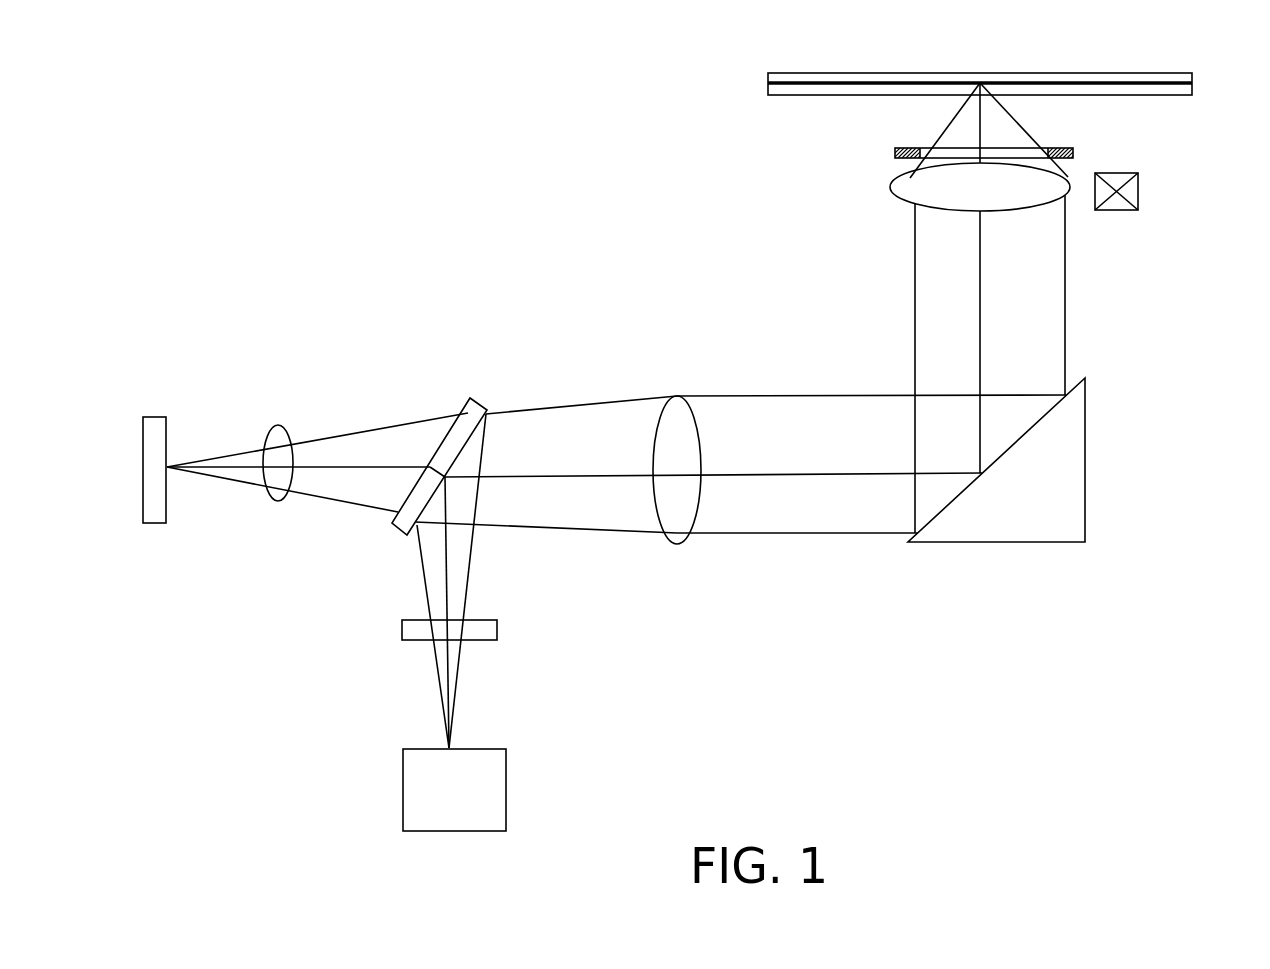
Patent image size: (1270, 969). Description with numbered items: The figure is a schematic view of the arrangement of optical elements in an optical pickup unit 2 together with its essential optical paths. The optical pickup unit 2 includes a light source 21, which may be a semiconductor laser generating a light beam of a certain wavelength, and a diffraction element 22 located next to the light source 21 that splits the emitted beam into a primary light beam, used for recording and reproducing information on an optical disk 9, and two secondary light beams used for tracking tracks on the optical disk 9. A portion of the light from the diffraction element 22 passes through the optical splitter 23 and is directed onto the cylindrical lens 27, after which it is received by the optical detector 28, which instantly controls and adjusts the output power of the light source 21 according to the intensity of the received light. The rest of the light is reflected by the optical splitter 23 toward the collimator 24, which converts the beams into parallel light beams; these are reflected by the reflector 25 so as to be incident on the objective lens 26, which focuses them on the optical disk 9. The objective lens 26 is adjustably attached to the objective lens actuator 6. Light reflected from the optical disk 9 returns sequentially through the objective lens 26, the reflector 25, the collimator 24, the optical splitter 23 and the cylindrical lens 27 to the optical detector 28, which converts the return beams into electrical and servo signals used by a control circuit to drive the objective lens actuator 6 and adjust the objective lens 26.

The optical pickup unit 2 is at (585, 149).
The optical disk 9 is at (1175, 80).
The objective lens 26 is at (1033, 190).
The objective lens actuator 6 is at (1118, 203).
The reflector 25 is at (1053, 487).
The collimator 24 is at (682, 430).
The optical splitter 23 is at (460, 430).
The cylindrical lens 27 is at (277, 442).
The optical detector 28 is at (153, 427).
The diffraction element 22 is at (487, 630).
The light source 21 is at (480, 787).